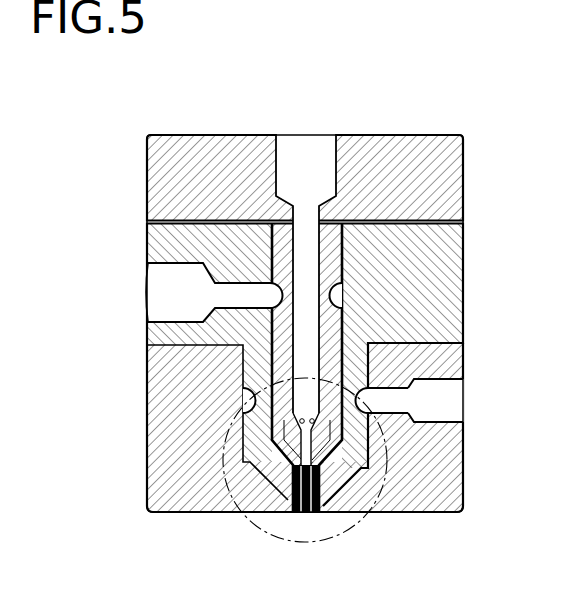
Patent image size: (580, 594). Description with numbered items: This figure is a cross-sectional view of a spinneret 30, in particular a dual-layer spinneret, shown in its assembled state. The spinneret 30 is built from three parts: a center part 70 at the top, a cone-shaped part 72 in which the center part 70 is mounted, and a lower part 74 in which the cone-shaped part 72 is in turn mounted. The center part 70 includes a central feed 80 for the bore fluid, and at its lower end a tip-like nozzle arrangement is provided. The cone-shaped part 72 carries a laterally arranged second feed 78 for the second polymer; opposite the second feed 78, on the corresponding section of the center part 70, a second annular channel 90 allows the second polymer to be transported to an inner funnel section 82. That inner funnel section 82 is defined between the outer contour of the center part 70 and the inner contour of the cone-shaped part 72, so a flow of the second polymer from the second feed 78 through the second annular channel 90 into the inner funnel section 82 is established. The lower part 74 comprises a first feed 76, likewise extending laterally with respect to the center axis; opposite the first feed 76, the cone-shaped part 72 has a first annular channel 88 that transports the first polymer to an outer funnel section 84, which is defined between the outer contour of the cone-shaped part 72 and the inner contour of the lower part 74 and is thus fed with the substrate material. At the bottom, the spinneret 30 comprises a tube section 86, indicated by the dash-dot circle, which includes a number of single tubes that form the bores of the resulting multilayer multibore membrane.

The spinneret 30 is at (348, 118).
The center part 70 is at (175, 176).
The cone-shaped part 72 is at (218, 330).
The lower part 74 is at (163, 487).
The first feed 76 is at (445, 411).
The second feed 78 is at (166, 292).
The central feed 80 is at (300, 149).
The inner funnel section 82 is at (341, 450).
The outer funnel section 84 is at (355, 477).
The tube section 86 is at (277, 465).
The first annular channel 88 is at (357, 397).
The second annular channel 90 is at (341, 297).